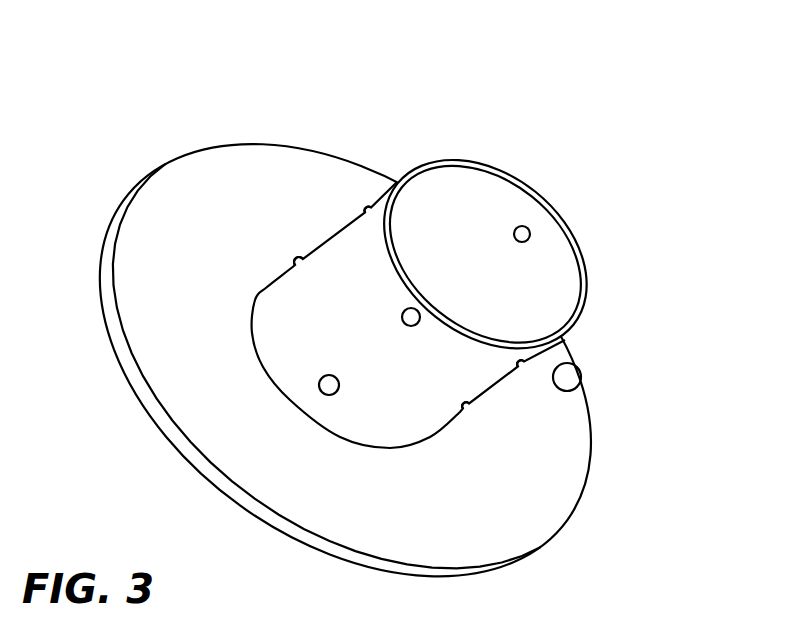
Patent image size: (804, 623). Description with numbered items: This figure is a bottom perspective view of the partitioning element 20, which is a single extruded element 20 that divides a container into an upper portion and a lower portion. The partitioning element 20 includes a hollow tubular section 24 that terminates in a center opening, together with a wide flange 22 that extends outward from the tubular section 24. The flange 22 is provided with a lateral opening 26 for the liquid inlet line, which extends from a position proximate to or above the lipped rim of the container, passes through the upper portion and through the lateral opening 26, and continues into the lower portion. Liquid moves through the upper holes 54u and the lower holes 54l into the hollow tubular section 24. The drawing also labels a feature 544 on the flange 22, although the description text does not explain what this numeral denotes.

The base assembly 20 is at (379, 322).
The base 22 is at (346, 339).
The raised platform 24 is at (438, 284).
The aperture 26 is at (567, 377).
The lower fastener openings 54l is at (368, 206).
The upper fastener openings 54u is at (321, 389).
The corner notch 544 is at (295, 265).